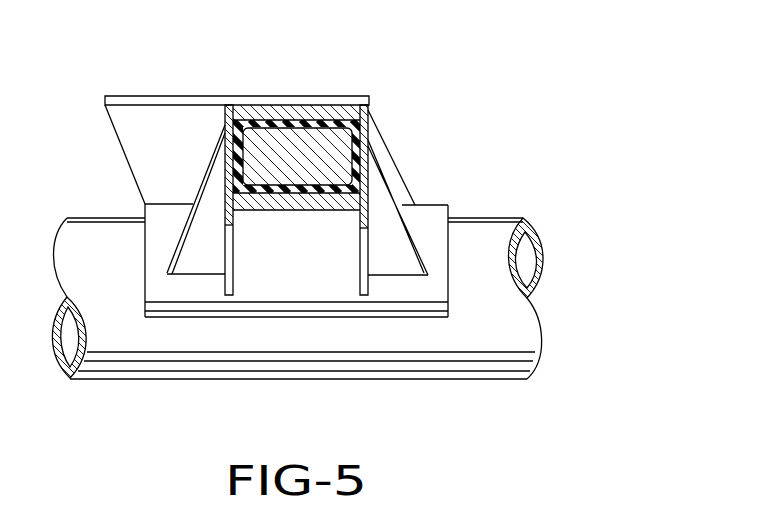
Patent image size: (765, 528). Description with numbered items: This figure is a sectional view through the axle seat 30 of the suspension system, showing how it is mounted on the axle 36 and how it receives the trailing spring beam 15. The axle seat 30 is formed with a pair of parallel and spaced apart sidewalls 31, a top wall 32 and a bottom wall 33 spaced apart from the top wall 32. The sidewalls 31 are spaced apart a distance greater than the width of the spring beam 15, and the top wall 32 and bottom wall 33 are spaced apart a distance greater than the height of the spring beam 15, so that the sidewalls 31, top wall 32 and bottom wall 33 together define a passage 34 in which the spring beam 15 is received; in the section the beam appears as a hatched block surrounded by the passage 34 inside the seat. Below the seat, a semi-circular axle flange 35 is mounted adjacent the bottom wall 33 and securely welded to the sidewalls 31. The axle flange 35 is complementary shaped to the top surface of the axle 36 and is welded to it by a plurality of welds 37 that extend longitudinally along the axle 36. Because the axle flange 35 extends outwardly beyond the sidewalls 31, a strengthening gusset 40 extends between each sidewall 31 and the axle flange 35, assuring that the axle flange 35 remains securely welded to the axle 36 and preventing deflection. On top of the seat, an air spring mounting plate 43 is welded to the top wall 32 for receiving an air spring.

The trailing spring beam 15 is at (245, 112).
The axle seat 30 is at (418, 155).
The sidewall 31 is at (226, 124).
The top wall 32 is at (272, 110).
The bottom wall 33 is at (273, 203).
The passage 34 is at (322, 117).
The axle flange 35 is at (322, 288).
The axle 36 is at (528, 331).
The weld 37 is at (427, 310).
The strengthening gusset 40 is at (193, 256).
The air spring mounting plate 43 is at (138, 100).